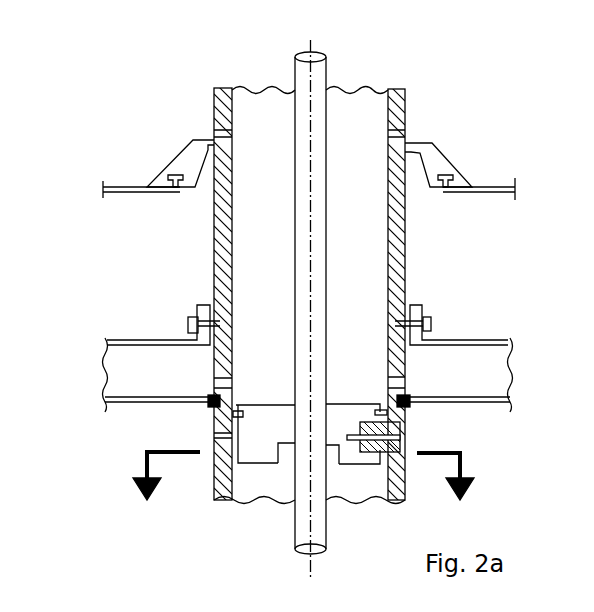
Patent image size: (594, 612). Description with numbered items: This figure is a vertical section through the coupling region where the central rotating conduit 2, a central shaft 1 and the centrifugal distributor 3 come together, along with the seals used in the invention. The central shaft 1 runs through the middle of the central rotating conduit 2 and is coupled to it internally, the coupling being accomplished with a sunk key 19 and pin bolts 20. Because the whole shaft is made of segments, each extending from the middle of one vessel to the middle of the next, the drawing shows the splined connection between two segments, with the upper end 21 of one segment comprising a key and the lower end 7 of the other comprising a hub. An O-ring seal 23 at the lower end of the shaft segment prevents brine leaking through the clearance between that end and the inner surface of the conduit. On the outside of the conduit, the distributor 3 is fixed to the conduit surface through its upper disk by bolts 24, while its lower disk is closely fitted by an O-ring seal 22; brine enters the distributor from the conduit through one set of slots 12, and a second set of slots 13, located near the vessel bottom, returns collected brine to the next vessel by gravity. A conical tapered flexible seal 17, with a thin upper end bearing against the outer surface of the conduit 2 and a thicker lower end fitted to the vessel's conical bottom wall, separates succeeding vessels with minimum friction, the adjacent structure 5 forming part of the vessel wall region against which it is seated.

The central shaft 1 is at (328, 537).
The central rotating conduit 2 is at (407, 263).
The centrifugal distributor 3 is at (475, 338).
The support bar 5 is at (493, 197).
The lower end (hub) 7 is at (265, 438).
The set of slots 12 is at (407, 383).
The second set of slots 13 is at (407, 132).
The conical tapered flexible seal 17 is at (458, 161).
The sunk key 19 is at (369, 455).
The pin bolts 20 is at (403, 435).
The upper end (key) 21 is at (288, 455).
The O-ring seal 22 is at (412, 404).
The O-ring seal 23 is at (372, 412).
The bolts 24 is at (435, 320).